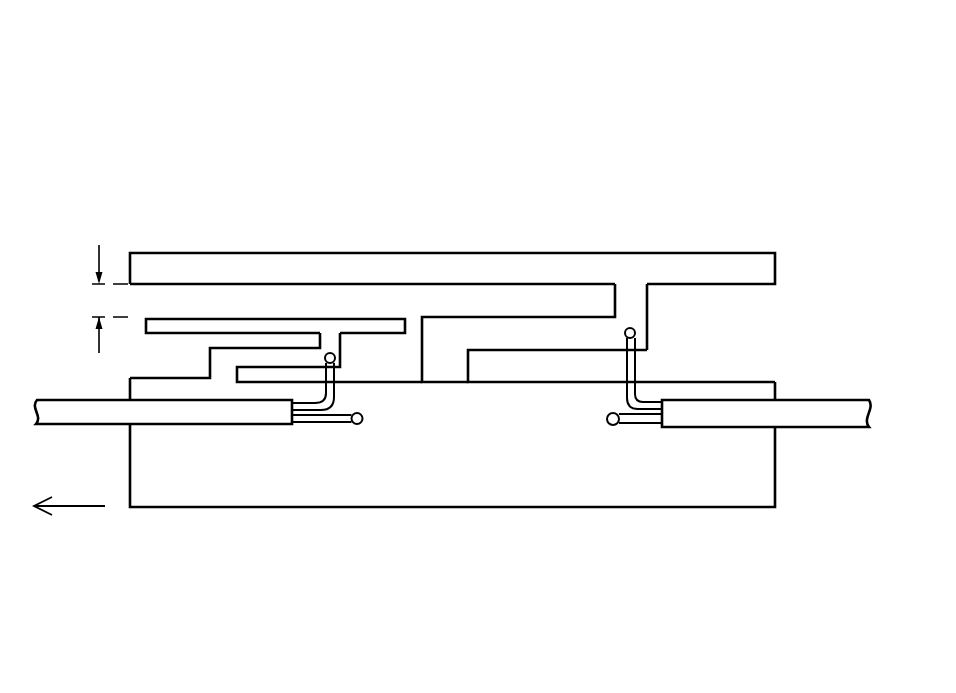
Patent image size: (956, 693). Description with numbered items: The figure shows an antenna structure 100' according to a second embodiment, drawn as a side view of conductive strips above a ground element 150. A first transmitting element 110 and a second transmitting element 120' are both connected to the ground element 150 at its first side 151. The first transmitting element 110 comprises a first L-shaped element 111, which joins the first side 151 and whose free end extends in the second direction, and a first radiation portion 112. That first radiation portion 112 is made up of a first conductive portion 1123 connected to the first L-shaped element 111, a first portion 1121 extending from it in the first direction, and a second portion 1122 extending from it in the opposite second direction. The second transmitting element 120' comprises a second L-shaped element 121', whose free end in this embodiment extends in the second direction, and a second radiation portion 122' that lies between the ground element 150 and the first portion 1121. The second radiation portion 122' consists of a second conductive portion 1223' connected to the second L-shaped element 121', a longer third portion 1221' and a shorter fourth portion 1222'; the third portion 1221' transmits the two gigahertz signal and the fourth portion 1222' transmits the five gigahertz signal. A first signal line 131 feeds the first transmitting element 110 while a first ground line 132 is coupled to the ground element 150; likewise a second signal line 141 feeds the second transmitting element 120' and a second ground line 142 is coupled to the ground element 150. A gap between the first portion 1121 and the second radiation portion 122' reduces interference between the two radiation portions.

The antenna structure 100' is at (458, 326).
The first transmitting element 110 is at (652, 103).
The first L-shaped element 111 is at (445, 330).
The first radiation portion 112 is at (755, 160).
The first portion 1121 is at (535, 270).
The second portion 1122 is at (728, 270).
The first conductive portion 1123 is at (630, 300).
The second transmitting element 120' is at (288, 215).
The second L-shaped element 121' is at (225, 241).
The second radiation portion 122' is at (296, 243).
The third portion 1221' is at (223, 247).
The fourth portion 1222' is at (373, 247).
The second conductive portion 1223' is at (329, 272).
The first signal line 131 is at (636, 365).
The first ground line 132 is at (643, 425).
The second signal line 141 is at (306, 410).
The second ground line 142 is at (343, 424).
The ground element 150 is at (485, 477).
The first side 151 is at (747, 380).